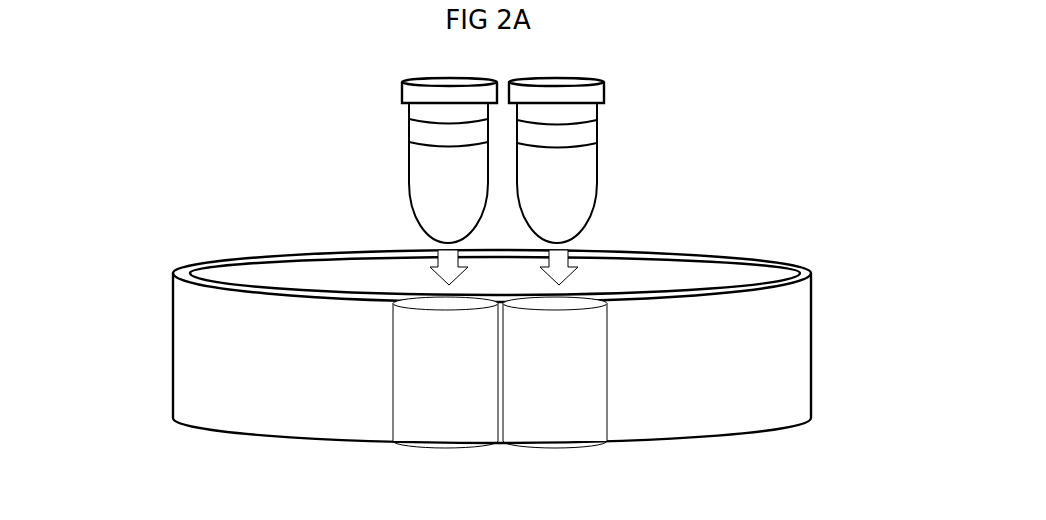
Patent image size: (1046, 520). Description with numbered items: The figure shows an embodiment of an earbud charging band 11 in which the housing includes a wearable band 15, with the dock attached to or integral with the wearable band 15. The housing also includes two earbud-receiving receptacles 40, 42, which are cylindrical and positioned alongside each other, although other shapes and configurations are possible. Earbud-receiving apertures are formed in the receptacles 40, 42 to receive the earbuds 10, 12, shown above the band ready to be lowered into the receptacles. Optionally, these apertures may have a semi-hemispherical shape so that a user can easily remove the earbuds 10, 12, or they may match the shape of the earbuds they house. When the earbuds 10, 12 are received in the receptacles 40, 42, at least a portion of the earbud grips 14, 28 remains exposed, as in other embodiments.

The earbud 10 is at (377, 150).
The earbud 12 is at (628, 151).
The earbud grip 14 is at (415, 93).
The earbud grip 28 is at (547, 93).
The earbud charging band 11 is at (419, 374).
The wearable band 15 is at (255, 398).
The earbud-receiving receptacle 40 is at (438, 398).
The earbud-receiving receptacle 42 is at (560, 398).